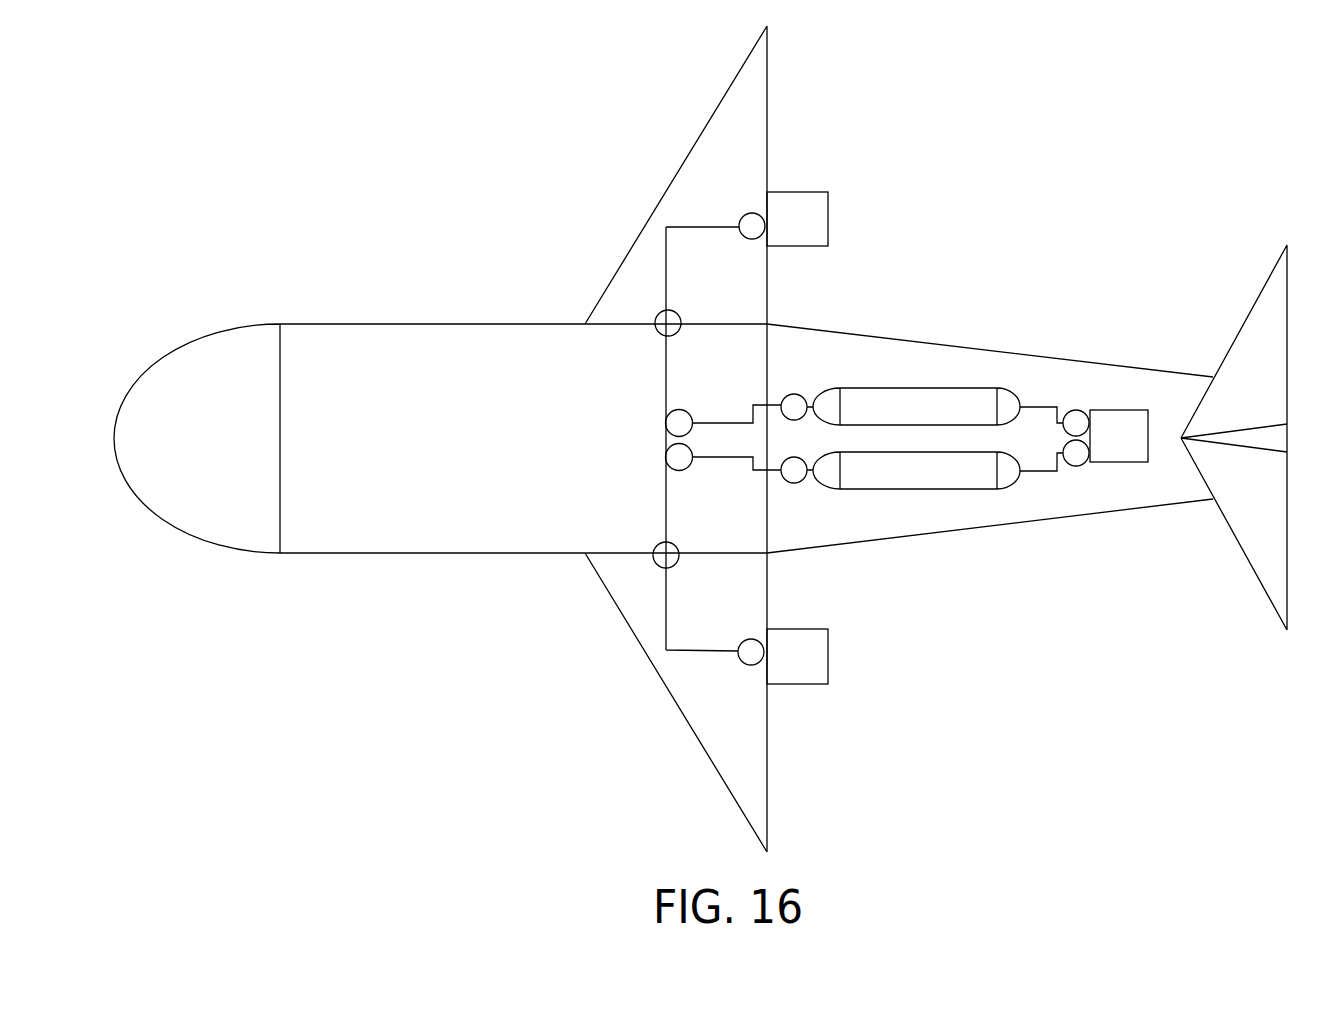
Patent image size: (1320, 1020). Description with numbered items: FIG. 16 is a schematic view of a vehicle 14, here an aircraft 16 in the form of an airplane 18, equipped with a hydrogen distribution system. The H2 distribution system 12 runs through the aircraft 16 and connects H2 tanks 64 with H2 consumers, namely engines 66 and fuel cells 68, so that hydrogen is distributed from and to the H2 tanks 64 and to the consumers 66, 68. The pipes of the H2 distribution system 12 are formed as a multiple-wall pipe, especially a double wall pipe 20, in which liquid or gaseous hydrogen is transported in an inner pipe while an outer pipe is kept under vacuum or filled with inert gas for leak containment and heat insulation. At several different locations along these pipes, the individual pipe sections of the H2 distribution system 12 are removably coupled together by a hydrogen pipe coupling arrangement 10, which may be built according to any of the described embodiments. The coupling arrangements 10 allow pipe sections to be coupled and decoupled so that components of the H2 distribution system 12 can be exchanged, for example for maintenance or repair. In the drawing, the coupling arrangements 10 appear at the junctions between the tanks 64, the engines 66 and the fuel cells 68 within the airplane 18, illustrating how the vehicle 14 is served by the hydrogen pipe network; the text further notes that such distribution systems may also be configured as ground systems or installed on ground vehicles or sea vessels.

The hydrogen pipe coupling arrangement 10 is at (668, 412).
The H2 distribution system 12 is at (772, 507).
The vehicle 14 is at (700, 439).
The aircraft 16 is at (440, 486).
The airplane 18 is at (387, 527).
The double wall pipe 20 is at (744, 456).
The H2 tanks 64 is at (968, 473).
The engines 66 is at (828, 197).
The fuel cells 68 is at (1117, 410).